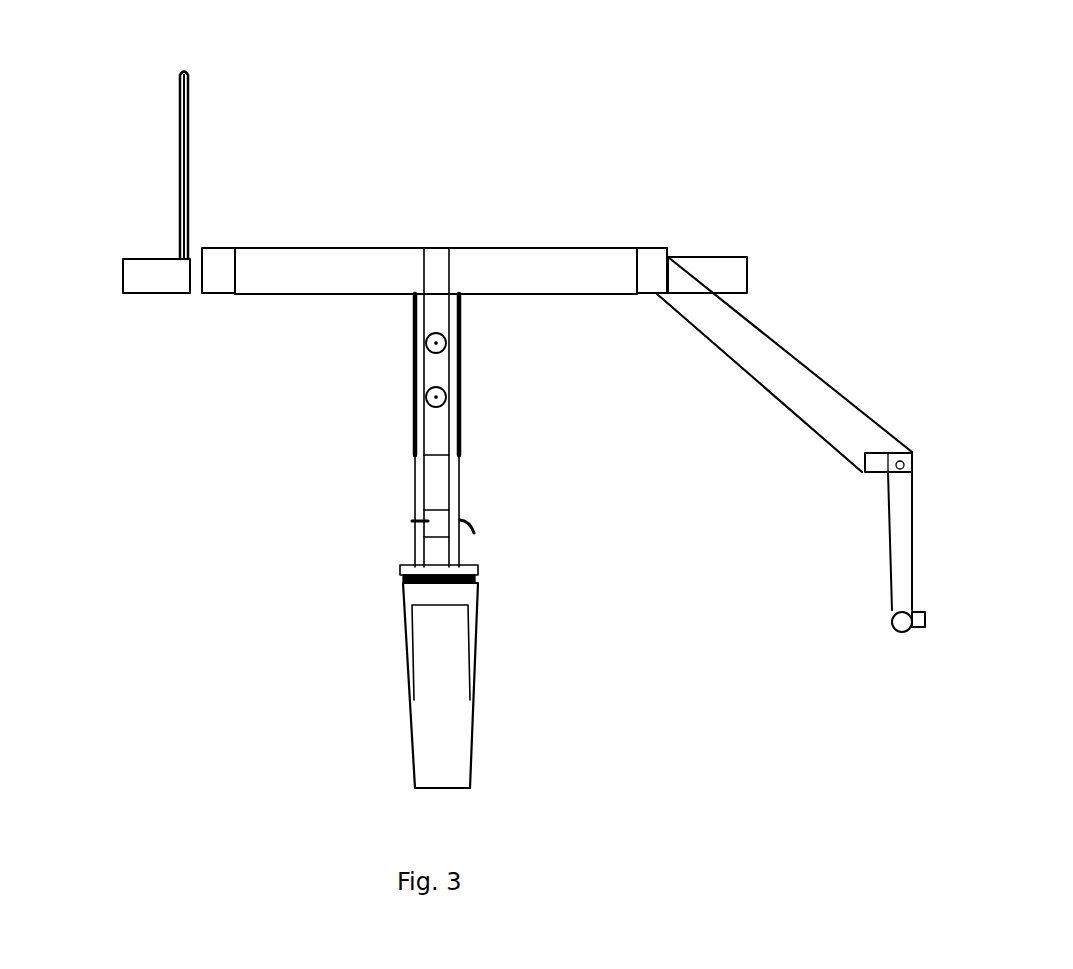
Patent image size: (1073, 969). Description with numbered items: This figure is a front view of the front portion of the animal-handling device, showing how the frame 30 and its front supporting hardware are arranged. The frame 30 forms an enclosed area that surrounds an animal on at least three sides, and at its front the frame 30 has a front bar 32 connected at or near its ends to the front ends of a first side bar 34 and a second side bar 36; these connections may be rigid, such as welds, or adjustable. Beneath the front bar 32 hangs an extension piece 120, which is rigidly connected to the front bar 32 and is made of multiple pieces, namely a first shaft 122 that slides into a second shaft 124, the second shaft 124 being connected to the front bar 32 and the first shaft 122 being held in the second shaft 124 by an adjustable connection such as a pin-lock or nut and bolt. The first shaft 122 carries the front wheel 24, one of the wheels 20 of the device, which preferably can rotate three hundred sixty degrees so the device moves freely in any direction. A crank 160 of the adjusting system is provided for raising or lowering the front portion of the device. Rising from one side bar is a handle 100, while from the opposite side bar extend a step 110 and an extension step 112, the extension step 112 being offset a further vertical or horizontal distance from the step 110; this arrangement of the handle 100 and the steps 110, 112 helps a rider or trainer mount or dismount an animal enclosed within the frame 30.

The wheels 20 is at (327, 641).
The front wheel 24 is at (443, 693).
The frame 30 is at (615, 222).
The front bar 32 is at (507, 263).
The first side bar 34 is at (735, 267).
The second side bar 36 is at (142, 275).
The handle 100 is at (188, 180).
The step 110 is at (785, 377).
The extension step 112 is at (902, 520).
The extension piece 120 is at (356, 425).
The first shaft 122 is at (460, 513).
The second shaft 124 is at (462, 367).
The crank 160 is at (462, 403).